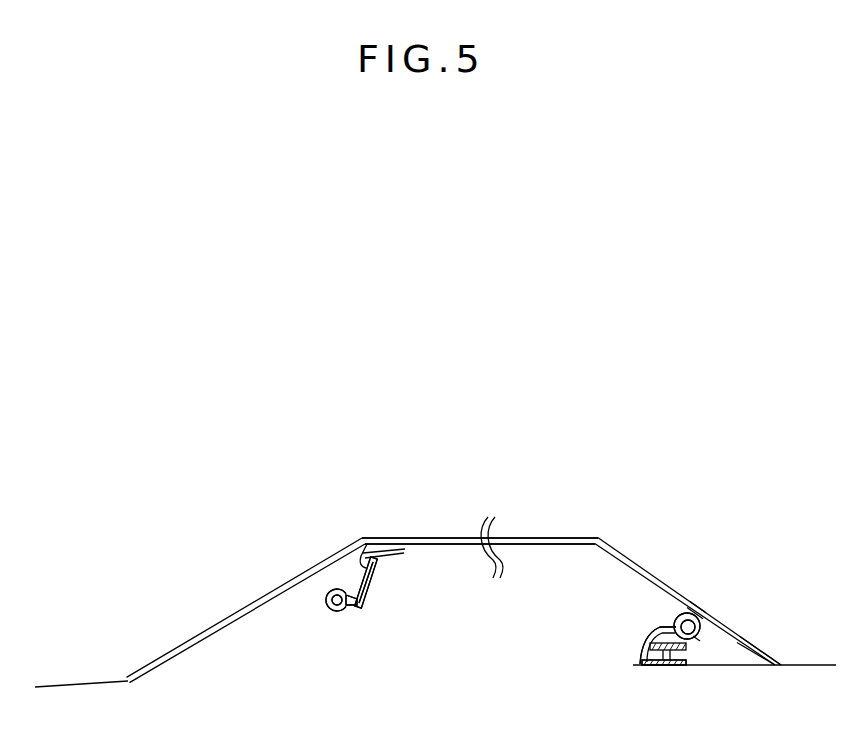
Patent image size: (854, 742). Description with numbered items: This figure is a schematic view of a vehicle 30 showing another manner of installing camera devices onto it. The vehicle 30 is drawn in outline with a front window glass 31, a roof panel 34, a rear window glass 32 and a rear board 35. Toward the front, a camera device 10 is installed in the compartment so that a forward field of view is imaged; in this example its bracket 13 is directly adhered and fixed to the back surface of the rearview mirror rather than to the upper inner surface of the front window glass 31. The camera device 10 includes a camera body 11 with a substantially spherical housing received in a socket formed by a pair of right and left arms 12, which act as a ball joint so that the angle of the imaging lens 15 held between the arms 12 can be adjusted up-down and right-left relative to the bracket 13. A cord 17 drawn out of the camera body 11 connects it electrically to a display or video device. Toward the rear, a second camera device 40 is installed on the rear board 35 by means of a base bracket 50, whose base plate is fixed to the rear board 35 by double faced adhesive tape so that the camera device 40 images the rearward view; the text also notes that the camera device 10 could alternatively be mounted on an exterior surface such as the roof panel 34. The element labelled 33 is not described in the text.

The camera device 10 is at (353, 637).
The camera body 11 is at (698, 612).
The arms 12 is at (333, 612).
The bracket 13 is at (348, 566).
The imaging lens 15 is at (326, 596).
The cord 17 is at (403, 551).
The vehicle 30 is at (508, 536).
The front window glass 31 is at (207, 630).
The rear window glass 32 is at (643, 571).
The bracket 33 is at (366, 604).
The roof panel 34 is at (561, 536).
The rear board 35 is at (743, 662).
The camera device 40 is at (634, 682).
The base bracket 50 is at (669, 667).